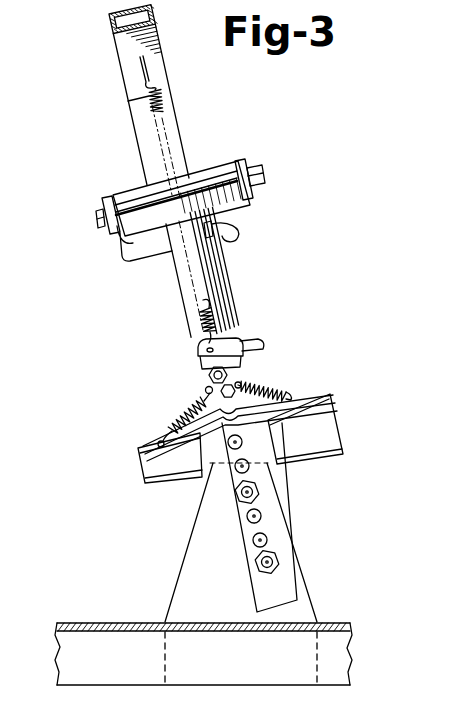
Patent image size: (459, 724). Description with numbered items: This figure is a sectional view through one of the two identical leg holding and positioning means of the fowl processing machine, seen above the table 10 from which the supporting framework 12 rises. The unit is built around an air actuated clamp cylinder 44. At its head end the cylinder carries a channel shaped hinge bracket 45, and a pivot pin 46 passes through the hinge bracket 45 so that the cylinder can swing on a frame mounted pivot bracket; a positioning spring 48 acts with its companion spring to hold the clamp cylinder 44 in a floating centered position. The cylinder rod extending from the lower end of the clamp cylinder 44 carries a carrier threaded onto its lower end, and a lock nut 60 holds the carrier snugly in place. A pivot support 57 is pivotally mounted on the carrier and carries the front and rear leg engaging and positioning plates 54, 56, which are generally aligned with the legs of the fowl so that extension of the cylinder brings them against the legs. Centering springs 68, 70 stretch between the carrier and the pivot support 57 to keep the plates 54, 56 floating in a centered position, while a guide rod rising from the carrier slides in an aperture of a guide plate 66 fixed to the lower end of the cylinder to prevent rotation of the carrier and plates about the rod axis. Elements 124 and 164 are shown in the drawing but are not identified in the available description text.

The table 10 is at (120, 622).
The supporting framework 12 is at (109, 26).
The clamp cylinder 44 is at (215, 275).
The hinge bracket 45 is at (128, 236).
The pivot pin 46 is at (209, 185).
The positioning spring 48 is at (163, 100).
The front leg engaging and positioning plate 54 is at (162, 472).
The rear leg engaging and positioning plate 56 is at (327, 435).
The pivot support 57 is at (248, 400).
The lock nut 60 is at (209, 375).
The guide plate 66 is at (198, 352).
The centering spring 68 is at (197, 408).
The centering spring 70 is at (275, 389).
The latch hook 124 is at (240, 233).
The tab 164 is at (246, 344).